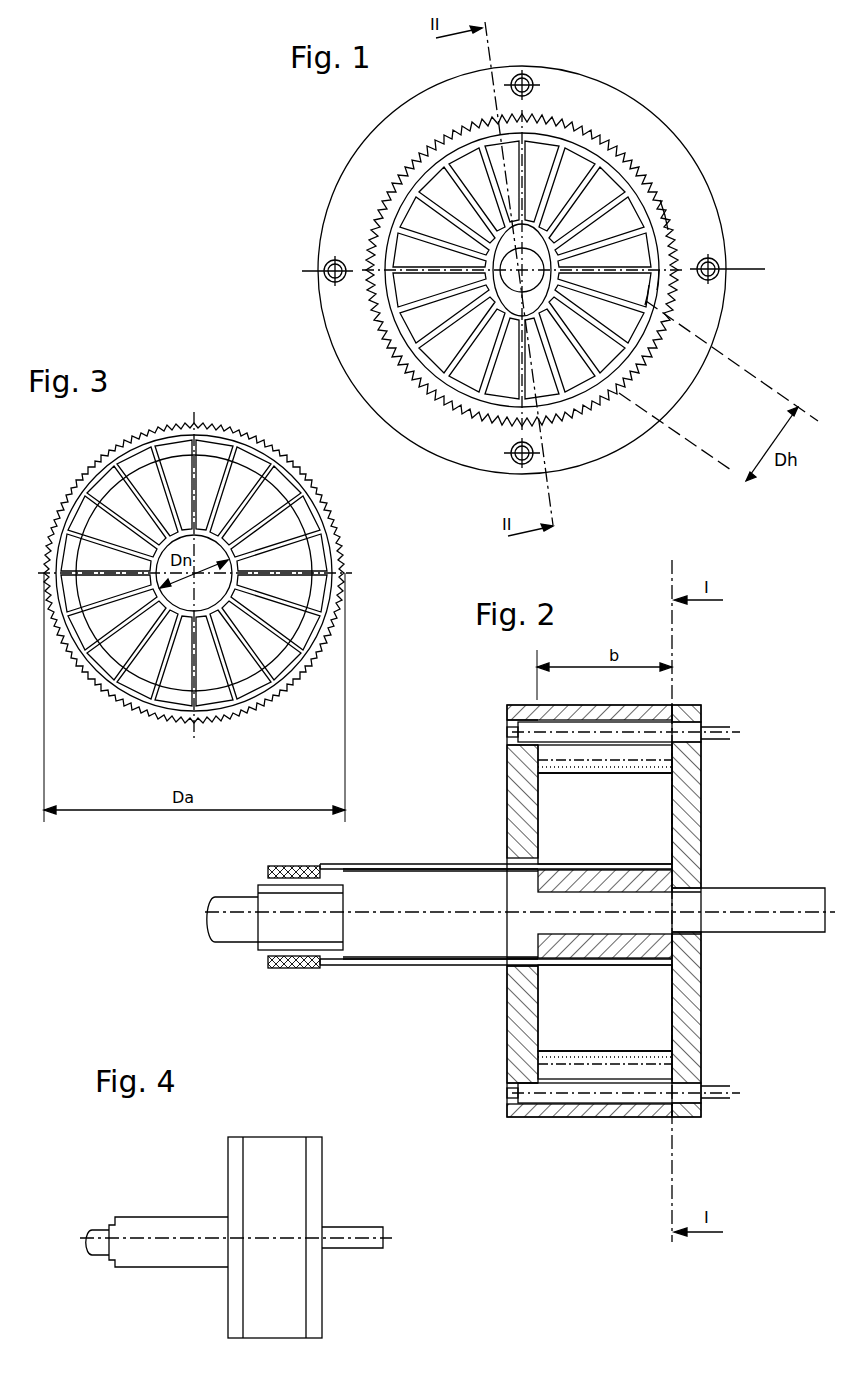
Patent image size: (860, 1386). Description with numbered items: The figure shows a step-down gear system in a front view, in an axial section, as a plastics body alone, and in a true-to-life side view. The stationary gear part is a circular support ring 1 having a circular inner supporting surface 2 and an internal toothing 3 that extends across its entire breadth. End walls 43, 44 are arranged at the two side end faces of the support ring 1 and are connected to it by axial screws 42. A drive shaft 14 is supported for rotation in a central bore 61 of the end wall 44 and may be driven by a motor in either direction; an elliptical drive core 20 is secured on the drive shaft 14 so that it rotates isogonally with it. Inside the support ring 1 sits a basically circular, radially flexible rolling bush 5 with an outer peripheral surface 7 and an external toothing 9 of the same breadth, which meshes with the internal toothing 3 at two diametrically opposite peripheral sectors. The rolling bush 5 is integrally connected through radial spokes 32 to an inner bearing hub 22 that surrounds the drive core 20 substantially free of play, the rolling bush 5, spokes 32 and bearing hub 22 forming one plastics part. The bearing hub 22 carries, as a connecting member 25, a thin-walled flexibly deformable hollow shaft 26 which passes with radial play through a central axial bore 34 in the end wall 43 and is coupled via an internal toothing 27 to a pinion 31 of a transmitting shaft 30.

In FIG. 1, the support ring 1 is at (383, 148).
In FIG. 2, the support ring 1 is at (663, 703).
In FIG. 4, the support ring 1 is at (270, 1150).
In FIG. 1, the inner supporting surface 2 is at (640, 187).
In FIG. 1, the internal toothing 3 is at (662, 207).
In FIG. 2, the internal toothing 3 is at (603, 775).
In FIG. 1, the rolling bush 5 is at (385, 201).
In FIG. 3, the rolling bush 5 is at (343, 530).
In FIG. 2, the rolling bush 5 is at (665, 768).
In FIG. 1, the outer peripheral surface 7 is at (652, 291).
In FIG. 1, the external toothing 9 is at (668, 279).
In FIG. 3, the external toothing 9 is at (322, 503).
In FIG. 2, the external toothing 9 is at (583, 1050).
In FIG. 1, the drive shaft 14 is at (505, 283).
In FIG. 2, the drive shaft 14 is at (780, 895).
In FIG. 4, the drive shaft 14 is at (362, 1228).
In FIG. 1, the drive core 20 is at (488, 234).
In FIG. 2, the drive core 20 is at (556, 879).
In FIG. 1, the bearing hub 22 is at (636, 362).
In FIG. 3, the bearing hub 22 is at (127, 698).
In FIG. 2, the bearing hub 22 is at (642, 964).
In FIG. 2, the connecting member 25 is at (430, 862).
In FIG. 4, the connecting member 25 is at (198, 1226).
In FIG. 2, the hollow shaft 26 is at (405, 968).
In FIG. 2, the internal toothing 27 is at (275, 972).
In FIG. 2, the transmitting shaft 30 is at (235, 900).
In FIG. 4, the transmitting shaft 30 is at (98, 1234).
In FIG. 2, the pinion 31 is at (340, 893).
In FIG. 1, the spokes 32 is at (489, 369).
In FIG. 3, the spokes 32 is at (202, 432).
In FIG. 2, the spokes 32 is at (557, 800).
In FIG. 2, the central axial bore 34 is at (510, 975).
In FIG. 1, the axial screws 42 is at (322, 267).
In FIG. 2, the axial screws 42 is at (512, 703).
In FIG. 2, the end wall 43 is at (512, 829).
In FIG. 4, the end wall 43 is at (233, 1182).
In FIG. 2, the end wall 44 is at (703, 866).
In FIG. 4, the end wall 44 is at (318, 1182).
In FIG. 2, the central bore 61 is at (703, 944).